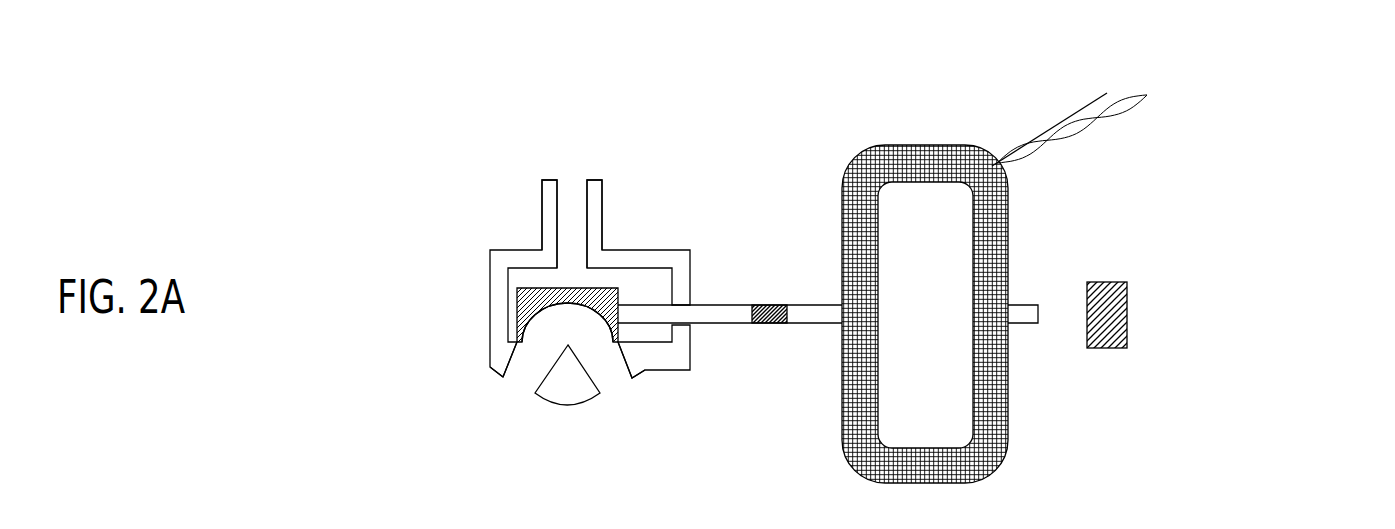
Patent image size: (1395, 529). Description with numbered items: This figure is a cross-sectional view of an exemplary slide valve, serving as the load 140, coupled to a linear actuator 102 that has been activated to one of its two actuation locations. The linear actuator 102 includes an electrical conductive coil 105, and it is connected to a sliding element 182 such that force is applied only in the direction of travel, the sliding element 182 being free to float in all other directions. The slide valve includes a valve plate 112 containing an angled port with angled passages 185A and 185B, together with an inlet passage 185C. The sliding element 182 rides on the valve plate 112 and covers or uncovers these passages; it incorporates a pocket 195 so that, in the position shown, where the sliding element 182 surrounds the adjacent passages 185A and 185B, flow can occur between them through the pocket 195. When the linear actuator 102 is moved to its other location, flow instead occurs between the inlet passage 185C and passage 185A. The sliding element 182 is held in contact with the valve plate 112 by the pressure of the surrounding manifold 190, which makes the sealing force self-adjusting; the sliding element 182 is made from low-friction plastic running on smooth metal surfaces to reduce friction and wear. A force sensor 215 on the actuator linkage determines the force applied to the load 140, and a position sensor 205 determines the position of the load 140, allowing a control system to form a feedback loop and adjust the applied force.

The linear actuator 102 is at (933, 127).
The electrical conductive coil 105 is at (1003, 233).
The valve plate 112 is at (650, 342).
The load 140 is at (462, 263).
The sliding element 182 is at (600, 302).
The angled passage 185A is at (525, 382).
The angled passage 185B is at (610, 380).
The inlet passage 185C is at (573, 208).
The manifold 190 is at (528, 258).
The pocket 195 is at (565, 307).
The position sensor 205 is at (1125, 290).
The force sensor 215 is at (777, 323).